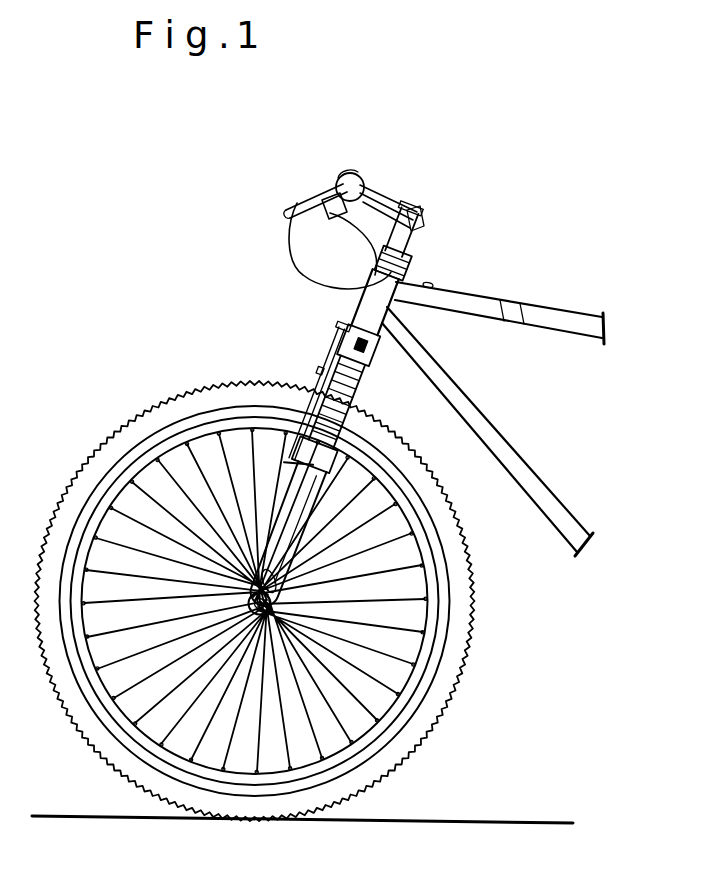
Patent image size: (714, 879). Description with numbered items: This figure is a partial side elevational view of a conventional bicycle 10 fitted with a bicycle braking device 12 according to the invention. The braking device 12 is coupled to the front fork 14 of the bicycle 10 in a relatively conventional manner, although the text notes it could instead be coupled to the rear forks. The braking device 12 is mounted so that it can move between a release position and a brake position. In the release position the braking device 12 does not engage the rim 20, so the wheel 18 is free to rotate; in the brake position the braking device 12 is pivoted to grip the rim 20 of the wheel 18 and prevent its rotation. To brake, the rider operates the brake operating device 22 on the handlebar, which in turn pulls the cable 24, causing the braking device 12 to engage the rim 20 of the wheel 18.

The bicycle 10 is at (493, 368).
The bicycle braking device 12 is at (306, 397).
The front fork 14 is at (281, 468).
The wheel 18 is at (316, 601).
The rim 20 is at (318, 601).
The brake operating device 22 is at (332, 212).
The cable 24 is at (342, 261).